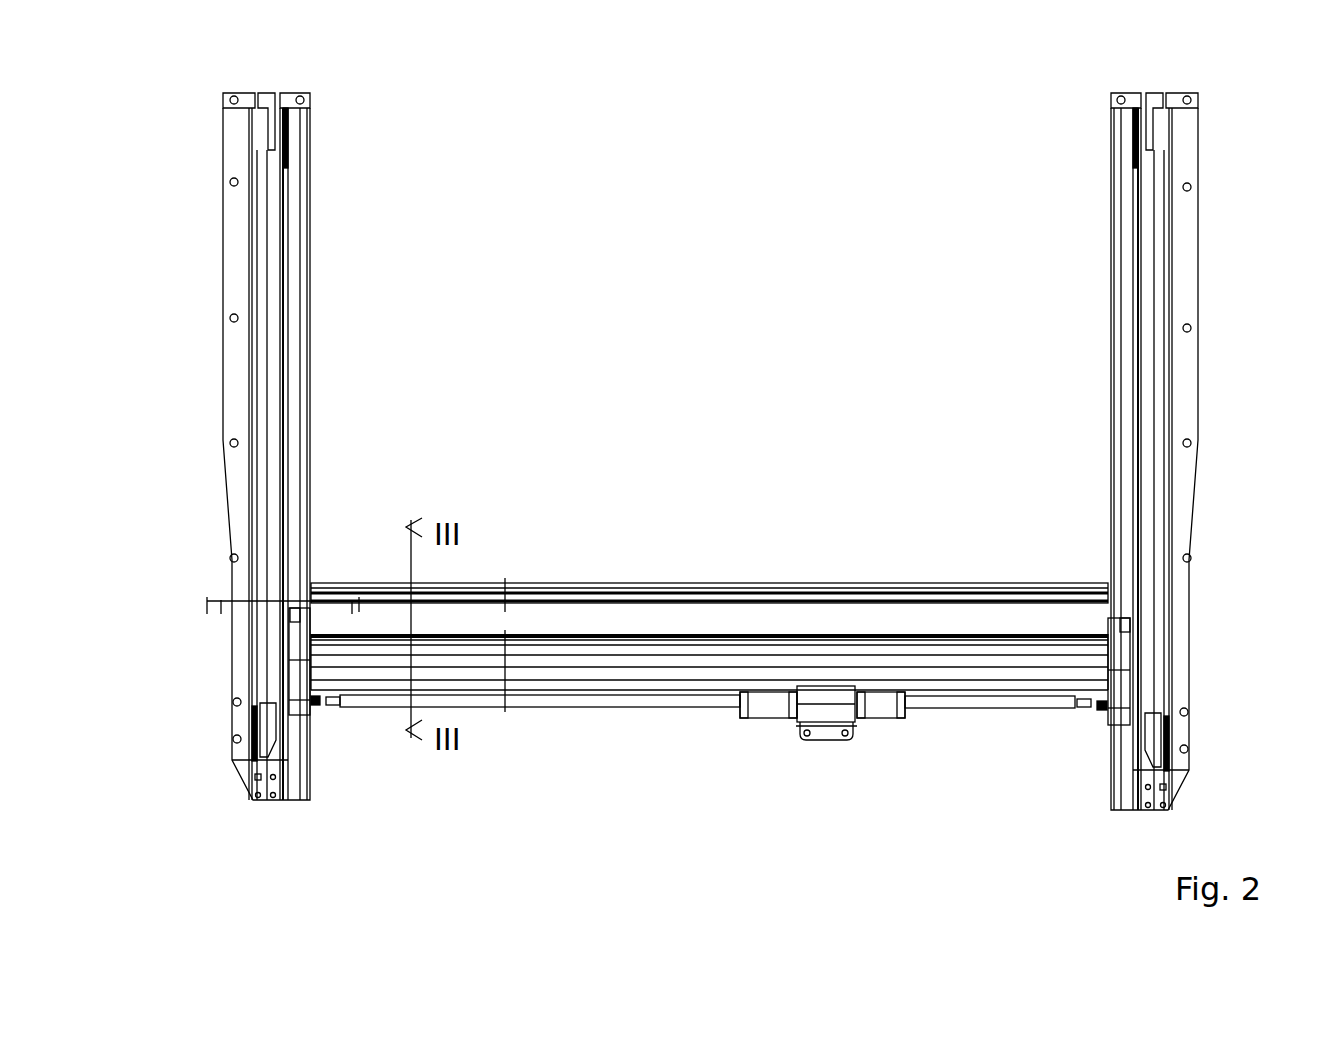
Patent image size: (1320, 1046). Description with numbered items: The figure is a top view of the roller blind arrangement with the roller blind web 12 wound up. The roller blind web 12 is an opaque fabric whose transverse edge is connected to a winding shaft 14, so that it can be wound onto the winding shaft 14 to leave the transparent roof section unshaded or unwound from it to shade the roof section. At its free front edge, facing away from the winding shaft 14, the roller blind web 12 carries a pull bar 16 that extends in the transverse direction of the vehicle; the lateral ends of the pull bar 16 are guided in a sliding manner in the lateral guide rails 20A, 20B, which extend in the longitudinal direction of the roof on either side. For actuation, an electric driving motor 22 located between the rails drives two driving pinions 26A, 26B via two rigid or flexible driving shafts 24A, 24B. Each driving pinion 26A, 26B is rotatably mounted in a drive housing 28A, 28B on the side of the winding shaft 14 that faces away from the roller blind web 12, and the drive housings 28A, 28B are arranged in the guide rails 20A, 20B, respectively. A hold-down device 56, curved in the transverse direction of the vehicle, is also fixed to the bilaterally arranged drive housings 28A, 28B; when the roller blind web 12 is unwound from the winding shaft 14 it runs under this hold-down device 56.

The roller blind web 12 is at (843, 628).
The winding shaft 14 is at (592, 662).
The pull bar 16 is at (972, 582).
The guide rail 20A is at (293, 285).
The guide rail 20B is at (1175, 260).
The electric driving motor 22 is at (826, 690).
The driving shaft 24A is at (672, 706).
The driving shaft 24B is at (945, 707).
The driving pinion 26A is at (320, 706).
The driving pinion 26B is at (1100, 710).
The drive housing 28A is at (292, 680).
The drive housing 28B is at (1120, 688).
The hold-down device 56 is at (470, 632).